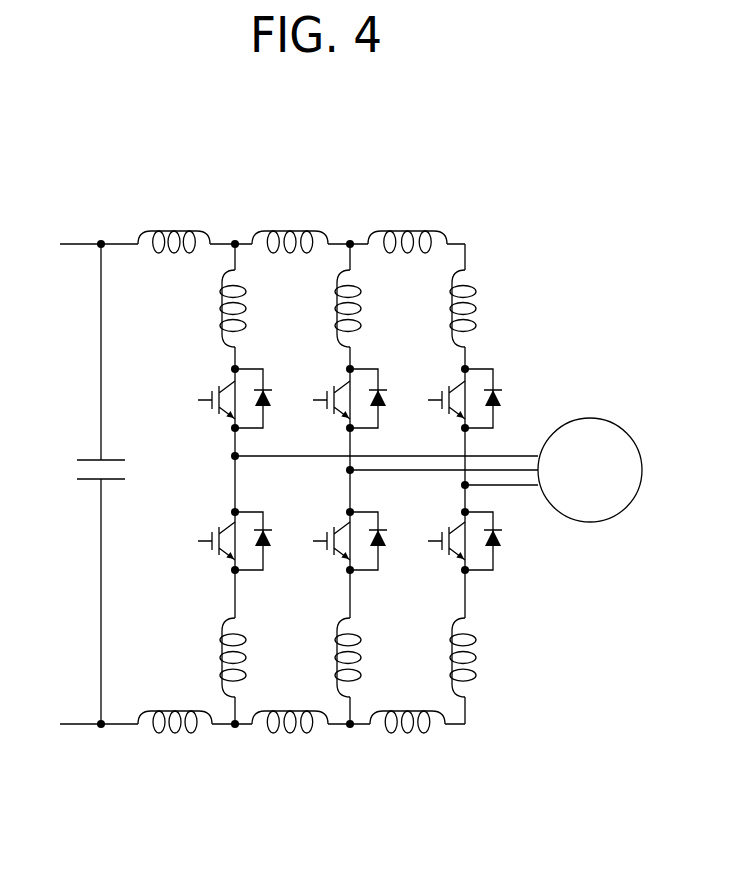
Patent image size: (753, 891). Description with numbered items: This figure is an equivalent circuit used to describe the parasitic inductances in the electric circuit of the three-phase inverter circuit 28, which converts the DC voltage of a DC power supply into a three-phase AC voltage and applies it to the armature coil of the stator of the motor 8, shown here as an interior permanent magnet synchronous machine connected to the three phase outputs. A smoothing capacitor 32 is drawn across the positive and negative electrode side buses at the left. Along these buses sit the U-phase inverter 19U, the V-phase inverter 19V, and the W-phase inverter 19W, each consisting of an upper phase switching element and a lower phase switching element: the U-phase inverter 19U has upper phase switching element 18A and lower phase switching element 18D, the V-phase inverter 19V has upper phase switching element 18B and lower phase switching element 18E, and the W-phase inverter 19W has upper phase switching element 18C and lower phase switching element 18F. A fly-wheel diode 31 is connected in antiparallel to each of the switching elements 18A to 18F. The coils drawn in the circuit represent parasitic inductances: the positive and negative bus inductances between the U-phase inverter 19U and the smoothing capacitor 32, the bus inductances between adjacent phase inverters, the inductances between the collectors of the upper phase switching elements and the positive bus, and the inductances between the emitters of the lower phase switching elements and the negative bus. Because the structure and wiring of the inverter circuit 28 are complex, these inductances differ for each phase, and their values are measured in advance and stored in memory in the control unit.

The three-phase inverter circuit 28 is at (592, 270).
The smoothing capacitor 32 is at (80, 460).
The U-phase inverter 19U is at (262, 305).
The V-phase inverter 19V is at (376, 305).
The W-phase inverter 19W is at (502, 272).
The upper phase switching element 18A is at (212, 412).
The upper phase switching element 18B is at (332, 388).
The upper phase switching element 18C is at (447, 388).
The lower phase switching element 18D is at (217, 530).
The lower phase switching element 18E is at (332, 530).
The lower phase switching element 18F is at (447, 530).
The fly-wheel diode 31 is at (496, 406).
The motor 8 is at (618, 426).